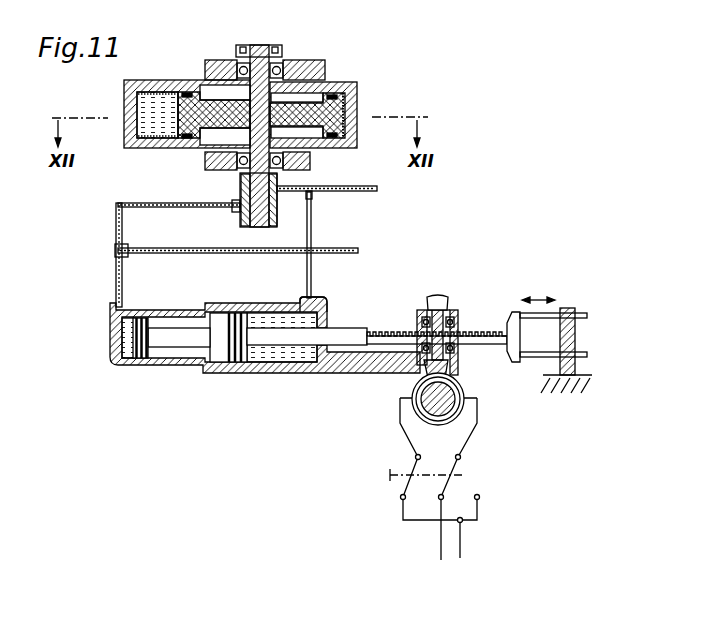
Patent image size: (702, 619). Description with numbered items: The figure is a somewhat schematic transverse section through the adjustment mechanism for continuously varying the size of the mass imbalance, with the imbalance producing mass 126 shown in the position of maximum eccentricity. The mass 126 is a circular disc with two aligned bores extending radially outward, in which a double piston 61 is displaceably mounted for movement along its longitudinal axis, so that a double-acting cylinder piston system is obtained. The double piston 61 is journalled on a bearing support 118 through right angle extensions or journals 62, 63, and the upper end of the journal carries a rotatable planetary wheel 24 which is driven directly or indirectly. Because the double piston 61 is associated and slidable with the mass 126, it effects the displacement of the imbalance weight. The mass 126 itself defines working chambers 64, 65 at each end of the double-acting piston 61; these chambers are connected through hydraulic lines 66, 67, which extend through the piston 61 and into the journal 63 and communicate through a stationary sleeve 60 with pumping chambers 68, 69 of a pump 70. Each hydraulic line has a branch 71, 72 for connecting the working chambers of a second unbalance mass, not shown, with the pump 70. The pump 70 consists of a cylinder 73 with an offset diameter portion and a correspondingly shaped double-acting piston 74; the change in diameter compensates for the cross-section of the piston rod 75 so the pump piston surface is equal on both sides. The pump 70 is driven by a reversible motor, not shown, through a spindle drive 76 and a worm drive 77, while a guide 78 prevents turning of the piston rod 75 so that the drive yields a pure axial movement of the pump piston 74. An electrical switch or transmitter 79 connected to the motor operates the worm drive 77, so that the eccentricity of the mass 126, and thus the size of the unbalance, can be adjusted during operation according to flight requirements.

The planetary wheel 24 is at (259, 49).
The stationary sleeve 60 is at (240, 190).
The double piston 61 is at (186, 92).
The journal 62 is at (287, 76).
The journal 63 is at (262, 131).
The working chamber 64 is at (157, 98).
The working chamber 65 is at (344, 114).
The hydraulic line 66 is at (117, 230).
The hydraulic line 67 is at (312, 236).
The pumping chamber 68 is at (118, 340).
The pumping chamber 69 is at (282, 360).
The pump 70 is at (245, 375).
The branch 71 is at (117, 257).
The branch 72 is at (313, 198).
The cylinder 73 is at (204, 310).
The double-acting piston 74 is at (233, 350).
The piston rod 75 is at (332, 333).
The spindle drive 76 is at (462, 340).
The worm drive 77 is at (423, 372).
The guide 78 is at (547, 338).
The electrical switch or transmitter 79 is at (442, 482).
The bearing support 118 is at (213, 72).
The imbalance producing mass 126 is at (357, 85).